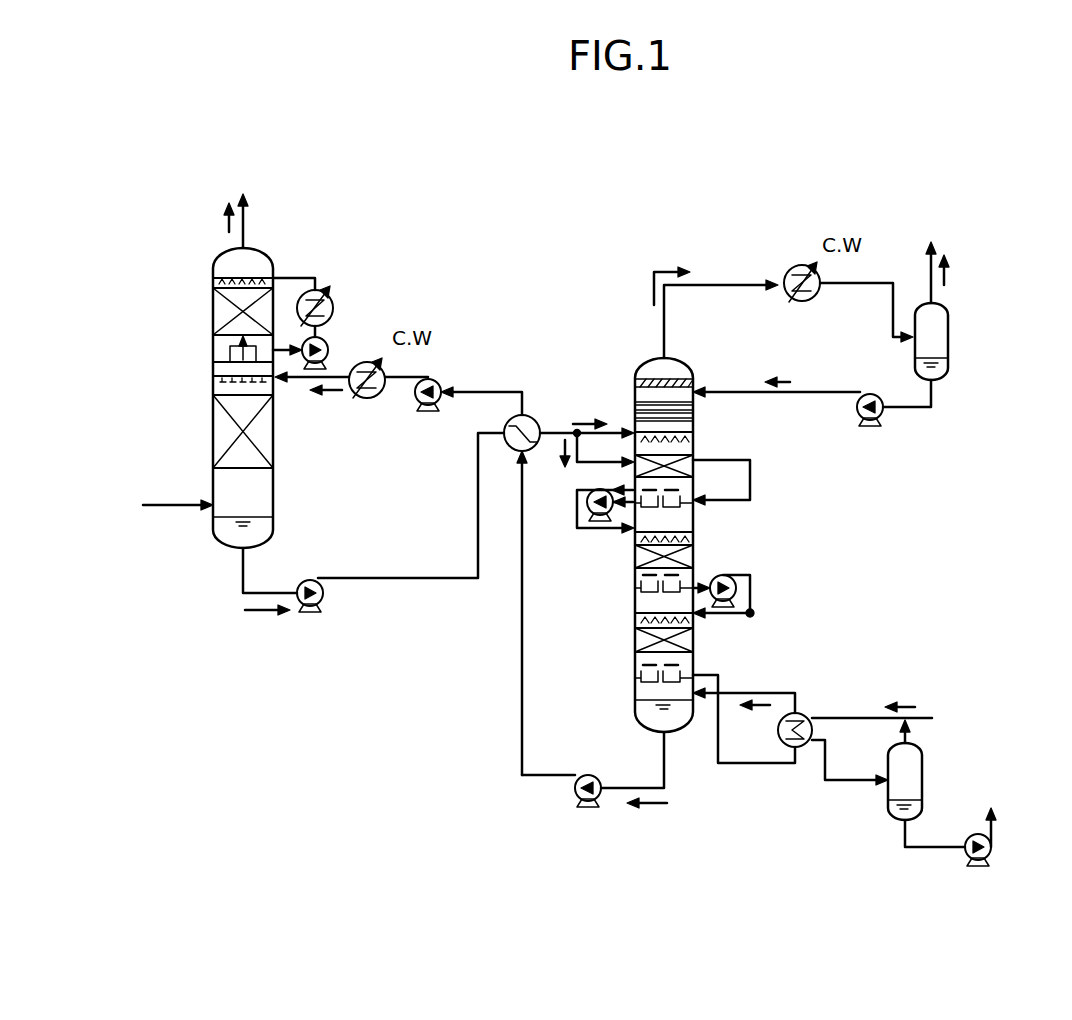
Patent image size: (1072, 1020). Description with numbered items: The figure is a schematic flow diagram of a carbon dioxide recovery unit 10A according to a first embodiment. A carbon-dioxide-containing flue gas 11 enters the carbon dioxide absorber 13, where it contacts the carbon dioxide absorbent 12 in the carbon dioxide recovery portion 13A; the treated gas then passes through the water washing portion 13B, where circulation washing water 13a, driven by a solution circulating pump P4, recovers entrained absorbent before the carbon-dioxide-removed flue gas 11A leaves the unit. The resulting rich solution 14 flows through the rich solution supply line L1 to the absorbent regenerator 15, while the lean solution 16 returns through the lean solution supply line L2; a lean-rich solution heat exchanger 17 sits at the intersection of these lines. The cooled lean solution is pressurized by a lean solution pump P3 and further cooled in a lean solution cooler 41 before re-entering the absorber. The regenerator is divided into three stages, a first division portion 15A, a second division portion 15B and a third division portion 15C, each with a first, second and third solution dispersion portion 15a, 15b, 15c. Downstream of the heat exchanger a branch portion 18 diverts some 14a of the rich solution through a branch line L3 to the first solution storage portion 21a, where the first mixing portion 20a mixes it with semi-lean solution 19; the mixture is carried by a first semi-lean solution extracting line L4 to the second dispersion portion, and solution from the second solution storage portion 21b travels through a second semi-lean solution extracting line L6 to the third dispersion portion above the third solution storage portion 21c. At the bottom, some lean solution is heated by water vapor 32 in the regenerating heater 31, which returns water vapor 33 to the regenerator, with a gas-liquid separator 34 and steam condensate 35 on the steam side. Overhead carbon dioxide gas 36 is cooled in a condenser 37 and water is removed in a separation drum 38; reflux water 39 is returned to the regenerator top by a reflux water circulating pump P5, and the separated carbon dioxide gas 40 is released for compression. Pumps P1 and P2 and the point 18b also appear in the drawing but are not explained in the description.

The CO2 recovery unit 10A is at (478, 180).
The CO2-containing flue gas 11 is at (187, 519).
The CO2-removed flue gas 11A is at (226, 221).
The CO2 absorbent 12 is at (328, 396).
The CO2 absorber 13 is at (262, 246).
The CO2 recovery portion 13A is at (222, 434).
The water washing portion 13B is at (222, 312).
The circulation washing water 13a is at (300, 266).
The rich solution 14 is at (266, 615).
The branched rich solution 14a is at (556, 458).
The absorbent regenerator 15 is at (640, 340).
The first division portion 15A is at (680, 455).
The second division portion 15B is at (680, 558).
The third division portion 15C is at (690, 641).
The first solution dispersion portion 15a is at (690, 436).
The second solution dispersion portion 15b is at (688, 534).
The third solution dispersion portion 15c is at (640, 612).
The lean solution 16 is at (655, 808).
The lean-rich solution heat exchanger 17 is at (517, 456).
The branch portion 18 is at (565, 430).
The junction 18b is at (755, 613).
The semi-lean solution 19 is at (618, 486).
The first mixing portion 20a is at (698, 490).
The first solution storage portion 21a is at (696, 507).
The second solution storage portion 21b is at (640, 589).
The third solution storage portion 21c is at (640, 676).
The regenerating heater 31 is at (805, 712).
The water vapor 32 is at (903, 701).
The water vapor 33 is at (760, 710).
The gas-liquid separator 34 is at (918, 777).
The steam condensate 35 is at (1003, 831).
The CO2 gas 36 is at (661, 270).
The condenser 37 is at (798, 265).
The separation drum 38 is at (938, 336).
The reflux water 39 is at (945, 368).
The CO2 gas 40 is at (950, 276).
The lean solution cooler 41 is at (372, 400).
The pump P1 is at (311, 579).
The pump P2 is at (597, 776).
The lean solution pump P3 is at (440, 380).
The solution circulating pump P4 is at (330, 345).
The reflux water circulating pump P5 is at (870, 394).
The rich solution supply line L1 is at (408, 582).
The lean solution supply line L2 is at (520, 686).
The branch line L3 is at (580, 446).
The first semi-lean solution extracting line L4 is at (576, 514).
The second semi-lean solution extracting line L6 is at (752, 582).